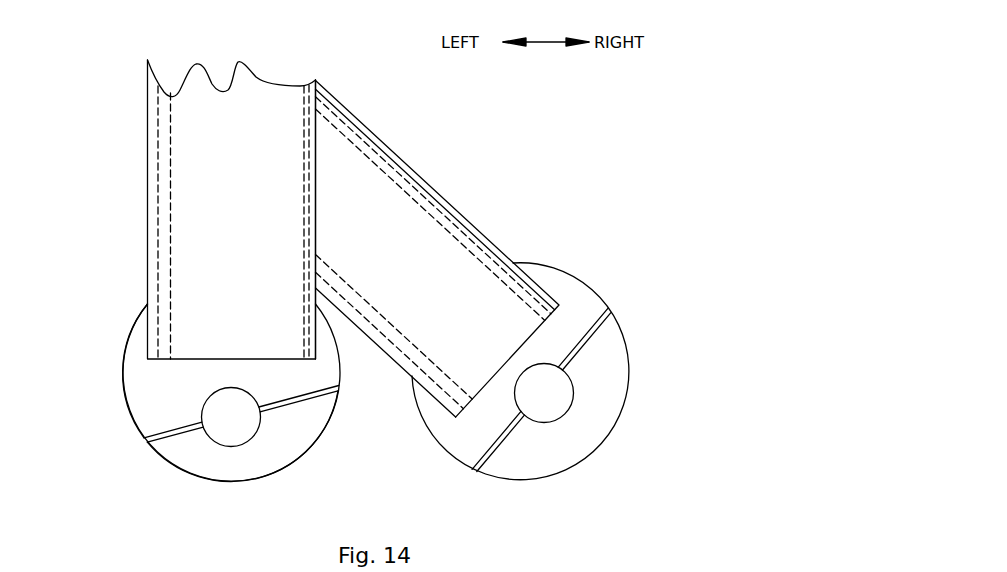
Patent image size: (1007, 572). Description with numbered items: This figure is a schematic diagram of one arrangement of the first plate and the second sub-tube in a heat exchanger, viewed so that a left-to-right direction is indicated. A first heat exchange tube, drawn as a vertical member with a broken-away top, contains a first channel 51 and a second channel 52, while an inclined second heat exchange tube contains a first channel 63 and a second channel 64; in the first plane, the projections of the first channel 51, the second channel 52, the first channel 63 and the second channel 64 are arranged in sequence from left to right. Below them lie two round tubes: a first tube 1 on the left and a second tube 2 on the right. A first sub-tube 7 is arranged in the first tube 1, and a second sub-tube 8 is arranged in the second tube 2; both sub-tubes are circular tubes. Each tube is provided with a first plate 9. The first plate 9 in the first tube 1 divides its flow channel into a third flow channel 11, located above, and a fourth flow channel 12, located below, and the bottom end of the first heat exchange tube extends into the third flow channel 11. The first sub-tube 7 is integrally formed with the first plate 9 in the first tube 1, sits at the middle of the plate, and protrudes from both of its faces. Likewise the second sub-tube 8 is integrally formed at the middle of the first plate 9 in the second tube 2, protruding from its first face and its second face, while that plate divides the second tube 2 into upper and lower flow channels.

The first tube 1 is at (127, 343).
The second tube 2 is at (603, 312).
The first sub-tube 7 is at (233, 447).
The second sub-tube 8 is at (570, 413).
The first plate 9 is at (168, 436).
The third flow channel 11 is at (145, 386).
The fourth flow channel 12 is at (217, 467).
The first channel of first heat exchange tube 51 is at (162, 225).
The second channel of first heat exchange tube 52 is at (305, 110).
The first channel of second heat exchange tube 63 is at (398, 358).
The second channel of second heat exchange tube 64 is at (442, 207).